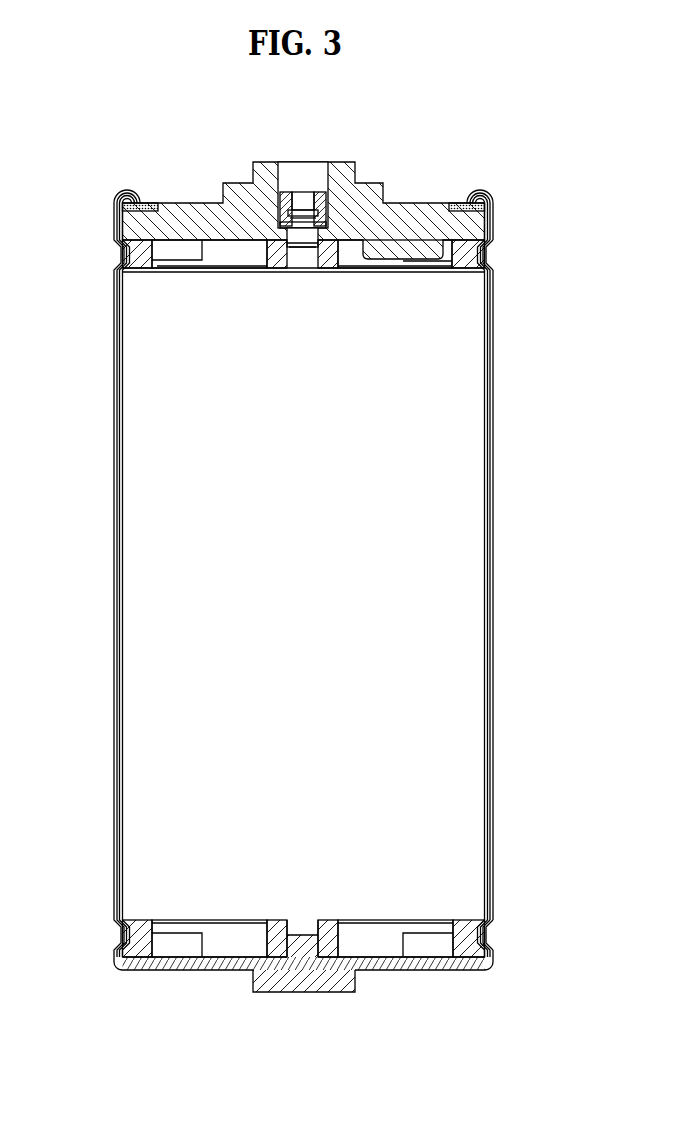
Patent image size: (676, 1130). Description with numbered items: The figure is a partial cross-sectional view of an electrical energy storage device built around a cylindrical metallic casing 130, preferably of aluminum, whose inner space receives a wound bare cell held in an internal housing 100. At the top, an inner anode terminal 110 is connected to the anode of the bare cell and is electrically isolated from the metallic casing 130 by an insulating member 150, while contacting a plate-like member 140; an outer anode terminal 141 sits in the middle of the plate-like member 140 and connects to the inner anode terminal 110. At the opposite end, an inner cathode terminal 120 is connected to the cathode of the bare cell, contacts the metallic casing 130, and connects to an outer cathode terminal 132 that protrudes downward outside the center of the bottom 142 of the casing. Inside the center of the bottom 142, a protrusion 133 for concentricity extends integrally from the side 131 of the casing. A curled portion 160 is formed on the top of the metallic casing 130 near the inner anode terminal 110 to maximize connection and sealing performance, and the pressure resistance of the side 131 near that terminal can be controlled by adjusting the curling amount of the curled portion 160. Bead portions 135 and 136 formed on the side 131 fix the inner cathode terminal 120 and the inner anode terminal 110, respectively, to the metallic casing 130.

The internal housing 100 is at (128, 437).
The inner anode terminal 110 is at (130, 255).
The inner cathode terminal 120 is at (467, 947).
The metallic casing 130 is at (296, 546).
The side 131 is at (91, 546).
The outer cathode terminal 132 is at (258, 992).
The protrusion 133 is at (303, 935).
The bead portion 135 is at (506, 932).
The bead portion 136 is at (506, 251).
The plate-like member 140 is at (187, 203).
The outer anode terminal 141 is at (253, 162).
The bottom 142 is at (208, 957).
The insulating member 150 is at (118, 222).
The curled portion 160 is at (117, 184).